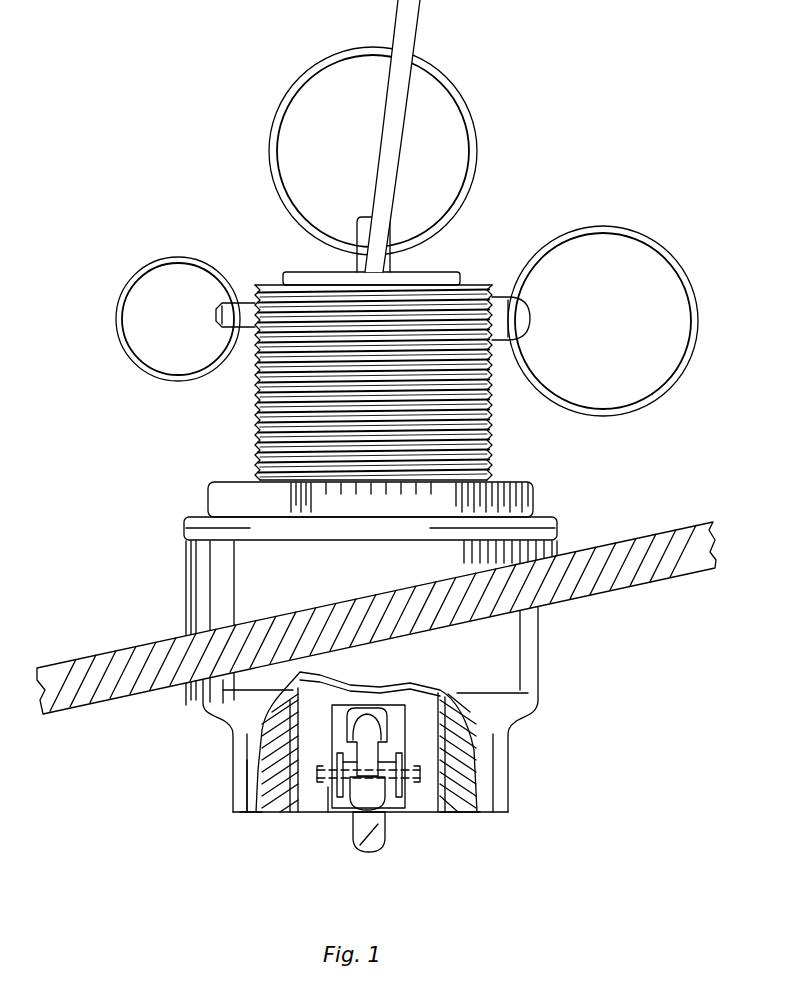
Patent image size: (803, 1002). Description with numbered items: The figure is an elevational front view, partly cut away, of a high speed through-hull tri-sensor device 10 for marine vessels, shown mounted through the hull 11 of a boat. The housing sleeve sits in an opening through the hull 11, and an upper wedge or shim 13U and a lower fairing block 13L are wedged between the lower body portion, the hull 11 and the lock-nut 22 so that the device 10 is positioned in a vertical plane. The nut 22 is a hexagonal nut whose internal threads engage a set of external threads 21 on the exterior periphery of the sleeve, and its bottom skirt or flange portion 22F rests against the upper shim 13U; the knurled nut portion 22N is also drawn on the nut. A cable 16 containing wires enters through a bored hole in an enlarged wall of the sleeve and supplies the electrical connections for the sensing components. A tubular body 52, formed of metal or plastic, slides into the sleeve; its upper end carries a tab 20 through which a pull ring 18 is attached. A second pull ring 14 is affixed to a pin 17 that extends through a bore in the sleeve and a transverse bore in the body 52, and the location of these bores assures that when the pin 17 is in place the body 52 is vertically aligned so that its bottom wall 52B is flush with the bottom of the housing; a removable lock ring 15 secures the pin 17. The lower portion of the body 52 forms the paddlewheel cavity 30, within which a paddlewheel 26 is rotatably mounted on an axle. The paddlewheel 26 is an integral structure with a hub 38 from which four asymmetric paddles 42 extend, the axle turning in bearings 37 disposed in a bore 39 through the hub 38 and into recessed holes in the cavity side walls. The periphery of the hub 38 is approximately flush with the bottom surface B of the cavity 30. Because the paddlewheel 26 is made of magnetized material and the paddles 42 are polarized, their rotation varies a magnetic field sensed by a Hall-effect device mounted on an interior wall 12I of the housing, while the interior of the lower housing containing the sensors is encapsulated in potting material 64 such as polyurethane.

The high speed through-hull tri-sensor device 10 is at (537, 166).
The hull 11 is at (676, 578).
The interior wall 12I is at (287, 812).
The lower fairing block 13L is at (540, 662).
The upper wedge or shim 13U is at (186, 582).
The second pull ring 14 is at (648, 240).
The removable lock ring 15 is at (183, 258).
The cable 16 is at (421, 8).
The pin 17 is at (246, 302).
The pull ring 18 is at (459, 91).
The tab 20 is at (392, 262).
The external threads 21 is at (492, 426).
The lock-nut 22 is at (536, 492).
The flange portion 22F is at (560, 528).
The nut knurl 22N is at (208, 497).
The paddlewheel 26 is at (400, 838).
The paddlewheel cavity 30 is at (345, 718).
The bearings 37 is at (392, 806).
The hub 38 is at (330, 812).
The bore 39 is at (393, 772).
The paddles 42 is at (360, 852).
The tubular body 52 is at (330, 707).
The bottom wall 52B is at (443, 812).
The potting material 64 is at (255, 812).
The bottom surface B is at (298, 812).